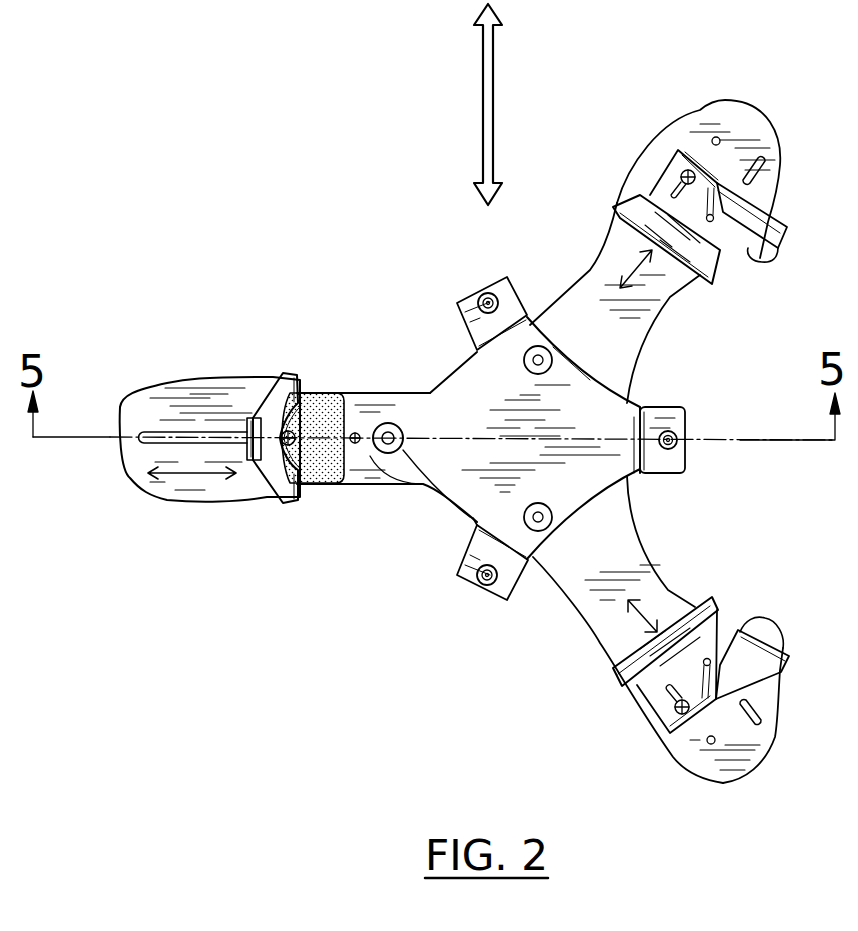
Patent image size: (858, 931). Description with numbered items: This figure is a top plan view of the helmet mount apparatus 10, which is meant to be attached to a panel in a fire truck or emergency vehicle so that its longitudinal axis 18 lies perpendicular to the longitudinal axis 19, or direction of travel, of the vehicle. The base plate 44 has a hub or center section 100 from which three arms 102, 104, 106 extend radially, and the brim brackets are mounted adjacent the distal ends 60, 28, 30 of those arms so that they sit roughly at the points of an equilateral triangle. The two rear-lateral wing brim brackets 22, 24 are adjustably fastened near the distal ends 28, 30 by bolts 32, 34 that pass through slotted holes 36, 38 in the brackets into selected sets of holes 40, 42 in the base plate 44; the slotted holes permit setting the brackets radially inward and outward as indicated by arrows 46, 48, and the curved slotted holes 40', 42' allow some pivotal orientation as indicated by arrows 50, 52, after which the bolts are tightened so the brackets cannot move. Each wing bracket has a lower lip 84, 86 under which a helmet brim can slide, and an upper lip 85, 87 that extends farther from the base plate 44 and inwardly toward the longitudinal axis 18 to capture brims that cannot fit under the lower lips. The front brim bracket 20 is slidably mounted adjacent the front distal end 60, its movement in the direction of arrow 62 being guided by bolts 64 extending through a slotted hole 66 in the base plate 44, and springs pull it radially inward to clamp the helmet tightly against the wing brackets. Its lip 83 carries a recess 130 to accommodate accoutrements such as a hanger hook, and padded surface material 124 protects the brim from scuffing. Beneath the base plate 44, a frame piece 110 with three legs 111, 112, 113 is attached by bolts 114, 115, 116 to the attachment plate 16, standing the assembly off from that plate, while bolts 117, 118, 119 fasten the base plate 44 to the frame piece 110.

The helmet mount apparatus 10 is at (162, 330).
The attachment plate 16 is at (637, 495).
The longitudinal axis 18 is at (468, 440).
The longitudinal axis 19 is at (494, 96).
The front brim bracket 20 is at (266, 384).
The rear-lateral wing brim bracket 22 is at (794, 251).
The rear-lateral wing brim bracket 24 is at (787, 632).
The distal end 28 is at (755, 112).
The distal end 30 is at (745, 770).
The bolt 32 is at (676, 153).
The bolt 34 is at (665, 716).
The slotted hole 36 is at (685, 195).
The slotted hole 38 is at (675, 706).
The holes 40 is at (774, 132).
The slotted hole 40' is at (793, 165).
The holes 42 is at (662, 761).
The slotted hole 42' is at (789, 708).
The base plate 44 is at (637, 342).
The arrow 46 is at (635, 262).
The arrow 48 is at (607, 628).
The arrow 50 is at (790, 218).
The arrow 52 is at (727, 611).
The front distal end 60 is at (118, 458).
The arrow 62 is at (200, 478).
The bolt 64 is at (300, 395).
The slotted hole 66 is at (152, 440).
The lip 83 is at (282, 372).
The lower lip 84 is at (700, 290).
The upper lip 85 is at (763, 265).
The lower lip 86 is at (610, 668).
The upper lip 87 is at (722, 600).
The hub or center section 100 is at (445, 360).
The arm 102 is at (197, 377).
The arm 104 is at (608, 232).
The arm 106 is at (566, 598).
The frame piece 110 is at (460, 365).
The leg 111 is at (548, 290).
The leg 112 is at (662, 406).
The leg 113 is at (470, 554).
The bolt 114 is at (477, 294).
The bolt 115 is at (677, 436).
The bolt 116 is at (466, 586).
The bolt 117 is at (558, 362).
The bolt 118 is at (472, 518).
The bolt 119 is at (423, 486).
The padded surface material 124 is at (319, 477).
The recess 130 is at (252, 462).